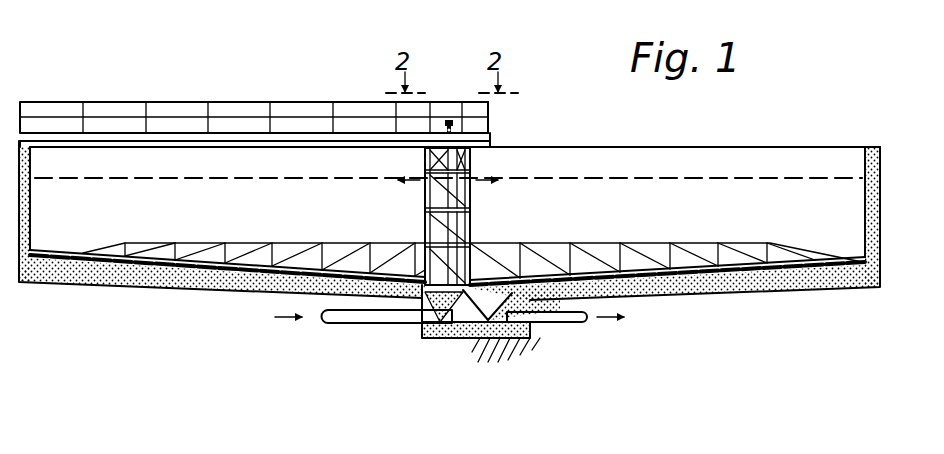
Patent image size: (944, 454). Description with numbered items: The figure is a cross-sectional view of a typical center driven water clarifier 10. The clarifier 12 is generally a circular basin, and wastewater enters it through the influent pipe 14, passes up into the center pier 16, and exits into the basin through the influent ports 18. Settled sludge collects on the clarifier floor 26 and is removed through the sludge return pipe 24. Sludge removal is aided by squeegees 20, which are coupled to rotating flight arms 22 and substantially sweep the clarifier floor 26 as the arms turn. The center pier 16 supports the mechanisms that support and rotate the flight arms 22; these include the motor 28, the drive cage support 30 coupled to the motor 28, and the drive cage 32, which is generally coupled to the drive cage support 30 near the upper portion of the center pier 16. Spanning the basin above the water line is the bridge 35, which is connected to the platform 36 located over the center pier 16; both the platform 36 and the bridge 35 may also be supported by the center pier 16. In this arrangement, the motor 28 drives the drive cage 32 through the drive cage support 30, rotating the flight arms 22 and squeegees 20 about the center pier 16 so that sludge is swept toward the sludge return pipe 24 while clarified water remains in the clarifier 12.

The center driven water clarifier 10 is at (299, 86).
The clarifier 12 is at (875, 147).
The influent pipe 14 is at (345, 326).
The center pier 16 is at (425, 200).
The influent ports 18 is at (462, 185).
The squeegees 20 is at (72, 250).
The flight arms 22 is at (240, 242).
The sludge return pipe 24 is at (580, 324).
The clarifier floor 26 is at (193, 286).
The motor 28 is at (446, 118).
The drive cage support 30 is at (472, 154).
The drive cage 32 is at (472, 229).
The bridge 35 is at (165, 101).
The platform 36 is at (490, 130).